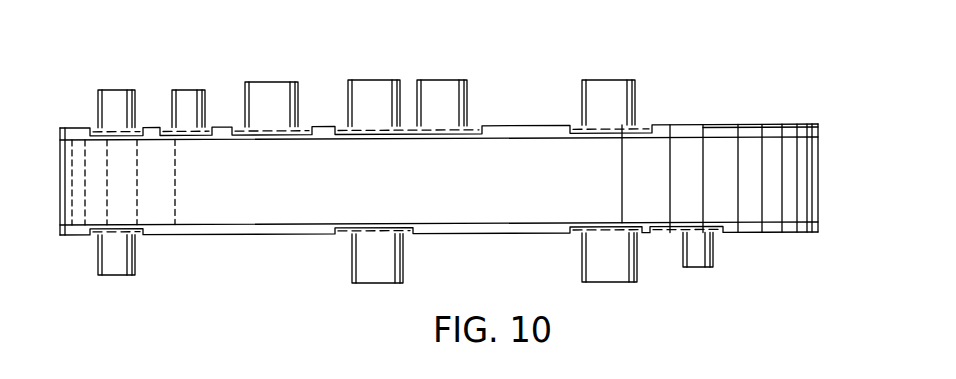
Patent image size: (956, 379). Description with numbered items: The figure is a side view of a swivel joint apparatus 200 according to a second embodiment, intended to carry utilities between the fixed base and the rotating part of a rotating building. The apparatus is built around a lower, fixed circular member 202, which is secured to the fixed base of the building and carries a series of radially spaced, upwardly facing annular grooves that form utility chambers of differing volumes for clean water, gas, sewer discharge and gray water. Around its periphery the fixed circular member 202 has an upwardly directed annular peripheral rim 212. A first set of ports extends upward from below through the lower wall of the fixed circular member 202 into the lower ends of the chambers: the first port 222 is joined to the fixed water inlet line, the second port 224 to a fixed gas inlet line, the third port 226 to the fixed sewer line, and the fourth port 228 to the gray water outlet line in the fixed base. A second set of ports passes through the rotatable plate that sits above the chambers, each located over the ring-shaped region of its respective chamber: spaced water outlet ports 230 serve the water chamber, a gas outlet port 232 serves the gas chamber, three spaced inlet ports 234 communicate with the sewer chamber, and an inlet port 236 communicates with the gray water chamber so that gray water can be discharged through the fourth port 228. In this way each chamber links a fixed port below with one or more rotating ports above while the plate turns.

The swivel joint apparatus 200 is at (725, 107).
The fixed circular member 202 is at (727, 198).
The annular peripheral rim 212 is at (773, 132).
The first port 222 is at (130, 258).
The second port 224 is at (700, 257).
The third port 226 is at (587, 257).
The fourth port 228 is at (348, 257).
The water outlet port 230 is at (113, 93).
The gas outlet port 232 is at (187, 93).
The sewer inlet port 234 is at (270, 90).
The gray water inlet port 236 is at (367, 87).